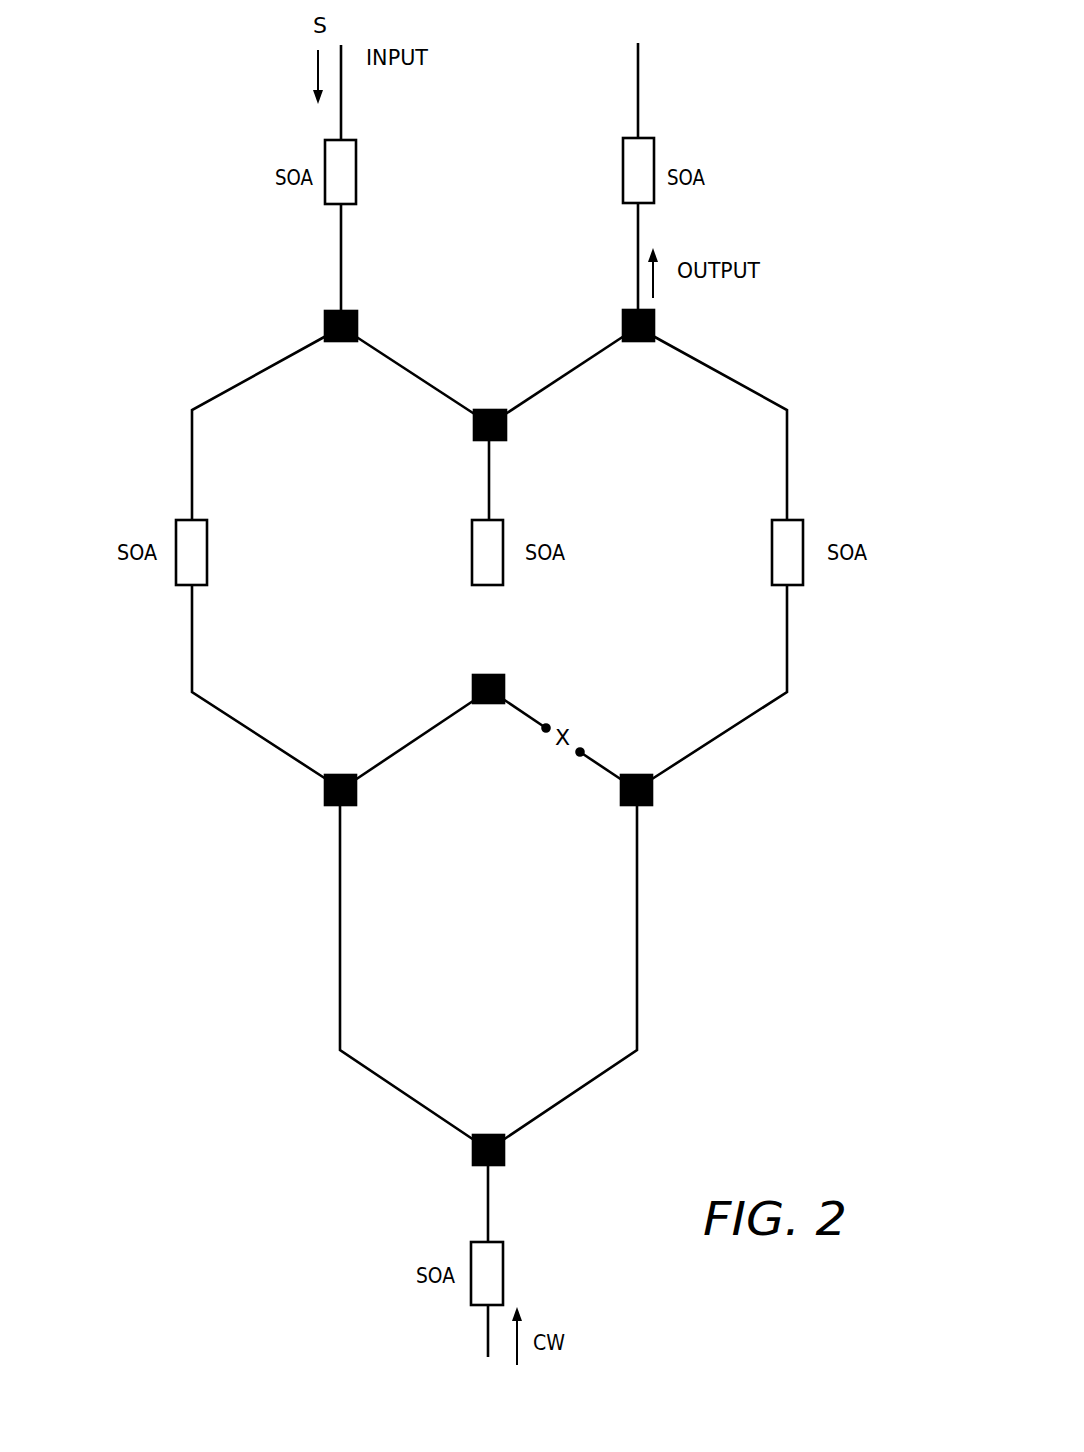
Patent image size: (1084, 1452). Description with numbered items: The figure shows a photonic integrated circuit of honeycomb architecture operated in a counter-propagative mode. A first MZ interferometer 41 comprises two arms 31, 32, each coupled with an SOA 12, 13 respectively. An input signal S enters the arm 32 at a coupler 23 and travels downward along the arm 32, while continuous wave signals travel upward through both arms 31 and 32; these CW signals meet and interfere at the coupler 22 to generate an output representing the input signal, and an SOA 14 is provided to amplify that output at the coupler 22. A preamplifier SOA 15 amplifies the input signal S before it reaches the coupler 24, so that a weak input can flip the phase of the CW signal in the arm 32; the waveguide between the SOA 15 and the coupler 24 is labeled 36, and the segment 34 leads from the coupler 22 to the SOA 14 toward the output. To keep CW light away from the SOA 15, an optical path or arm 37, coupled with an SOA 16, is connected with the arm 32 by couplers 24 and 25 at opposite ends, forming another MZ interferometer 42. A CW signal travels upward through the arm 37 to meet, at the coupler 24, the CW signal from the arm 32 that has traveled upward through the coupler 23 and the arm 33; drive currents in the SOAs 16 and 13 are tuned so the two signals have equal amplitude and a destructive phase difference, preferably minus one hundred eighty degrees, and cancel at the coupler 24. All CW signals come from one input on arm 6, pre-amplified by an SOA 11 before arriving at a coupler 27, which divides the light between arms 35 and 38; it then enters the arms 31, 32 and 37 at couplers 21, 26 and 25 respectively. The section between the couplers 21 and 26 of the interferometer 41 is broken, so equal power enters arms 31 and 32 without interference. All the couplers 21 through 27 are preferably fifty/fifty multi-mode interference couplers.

The arm 6 is at (536, 1203).
The SOA 11 is at (490, 1270).
The SOA 12 is at (795, 560).
The SOA 13 is at (485, 570).
The SOA 14 is at (645, 153).
The SOA 15 is at (349, 178).
The SOA 16 is at (198, 560).
The coupler 21 is at (639, 778).
The coupler 22 is at (653, 320).
The coupler 23 is at (492, 412).
The coupler 24 is at (356, 320).
The coupler 25 is at (342, 778).
The coupler 26 is at (490, 705).
The coupler 27 is at (490, 1138).
The arm 31 is at (788, 452).
The arm 32 is at (490, 472).
The arm 33 is at (410, 373).
The output waveguide 34 is at (640, 213).
The arm 35 is at (638, 868).
The input waveguide 36 is at (342, 252).
The arm 37 is at (193, 452).
The arm 38 is at (340, 868).
The MZ interferometer 41 is at (640, 537).
The MZ interferometer 42 is at (335, 537).